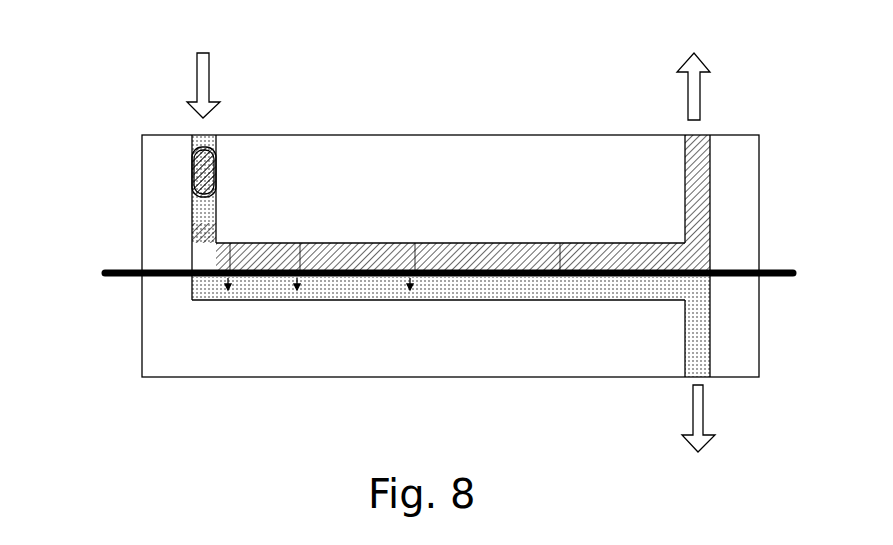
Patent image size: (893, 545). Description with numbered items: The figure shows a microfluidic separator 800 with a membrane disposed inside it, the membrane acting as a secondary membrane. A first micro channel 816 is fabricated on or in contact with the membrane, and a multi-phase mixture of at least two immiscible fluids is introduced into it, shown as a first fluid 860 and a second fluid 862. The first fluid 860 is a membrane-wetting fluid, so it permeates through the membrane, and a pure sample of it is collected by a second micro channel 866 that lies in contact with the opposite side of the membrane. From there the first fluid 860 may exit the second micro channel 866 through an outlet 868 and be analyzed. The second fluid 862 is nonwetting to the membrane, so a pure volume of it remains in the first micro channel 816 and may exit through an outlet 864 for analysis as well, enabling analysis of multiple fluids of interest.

The microfluidic separator 800 is at (118, 112).
The first fluid 860 is at (216, 142).
The second fluid 862 is at (216, 176).
The first micro channel 816 is at (216, 218).
The outlet 864 is at (703, 128).
The second micro channel 866 is at (362, 300).
The outlet 868 is at (683, 387).